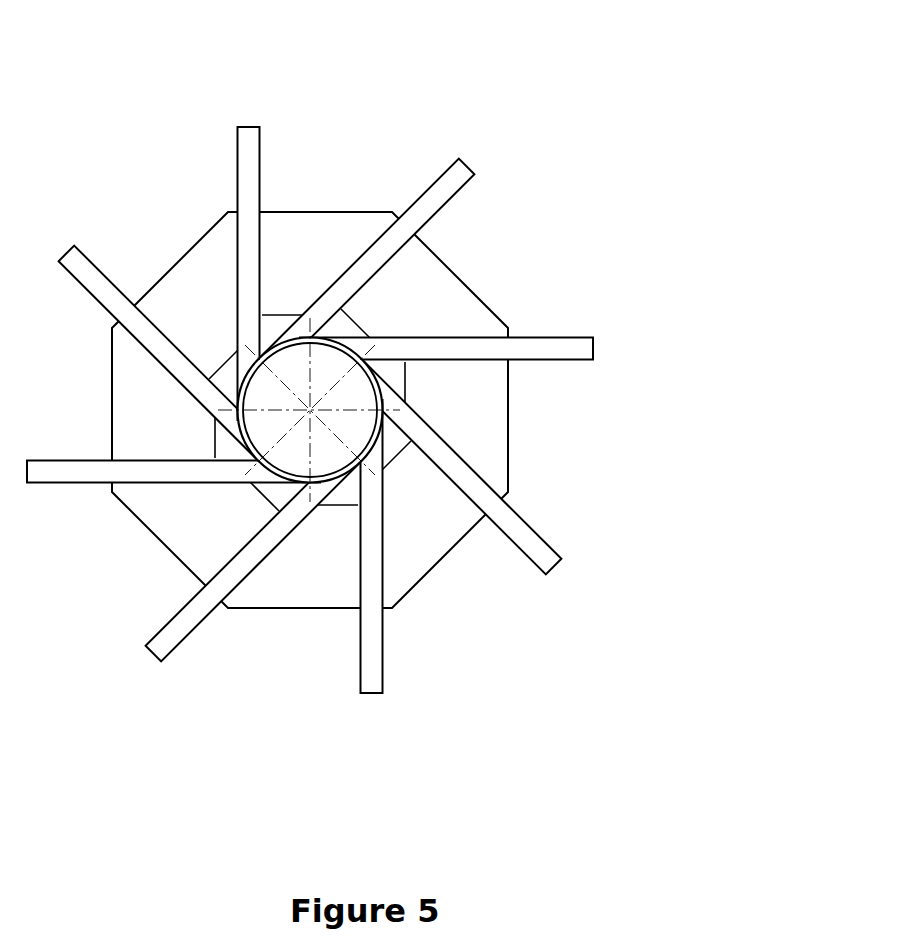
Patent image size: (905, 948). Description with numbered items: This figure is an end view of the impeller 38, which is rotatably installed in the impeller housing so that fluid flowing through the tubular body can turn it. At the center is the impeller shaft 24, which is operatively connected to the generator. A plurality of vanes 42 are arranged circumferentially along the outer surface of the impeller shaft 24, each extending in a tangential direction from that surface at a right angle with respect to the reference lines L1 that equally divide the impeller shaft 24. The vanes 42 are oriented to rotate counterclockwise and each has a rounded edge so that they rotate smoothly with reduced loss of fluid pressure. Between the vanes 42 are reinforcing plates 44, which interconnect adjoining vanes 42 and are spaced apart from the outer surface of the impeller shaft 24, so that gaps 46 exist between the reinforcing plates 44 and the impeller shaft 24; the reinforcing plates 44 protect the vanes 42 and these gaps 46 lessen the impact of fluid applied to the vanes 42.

The impeller 38 is at (412, 131).
The vanes 42 is at (466, 166).
The gaps 46 is at (347, 325).
The impeller shaft 24 is at (383, 426).
The reinforcing plates 44 is at (430, 555).
The reference lines L1 is at (290, 393).